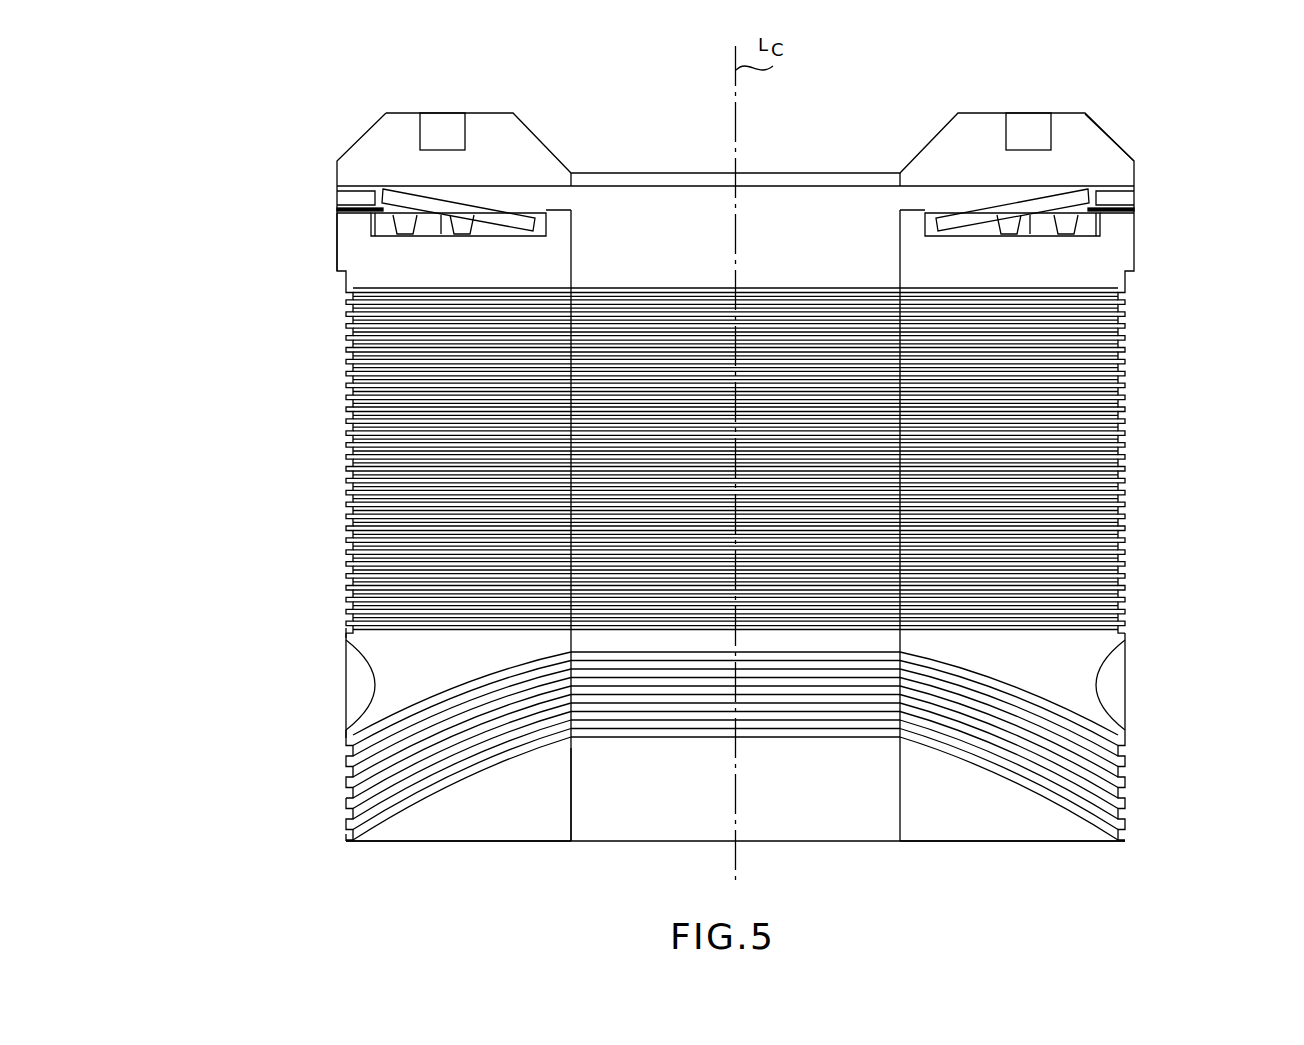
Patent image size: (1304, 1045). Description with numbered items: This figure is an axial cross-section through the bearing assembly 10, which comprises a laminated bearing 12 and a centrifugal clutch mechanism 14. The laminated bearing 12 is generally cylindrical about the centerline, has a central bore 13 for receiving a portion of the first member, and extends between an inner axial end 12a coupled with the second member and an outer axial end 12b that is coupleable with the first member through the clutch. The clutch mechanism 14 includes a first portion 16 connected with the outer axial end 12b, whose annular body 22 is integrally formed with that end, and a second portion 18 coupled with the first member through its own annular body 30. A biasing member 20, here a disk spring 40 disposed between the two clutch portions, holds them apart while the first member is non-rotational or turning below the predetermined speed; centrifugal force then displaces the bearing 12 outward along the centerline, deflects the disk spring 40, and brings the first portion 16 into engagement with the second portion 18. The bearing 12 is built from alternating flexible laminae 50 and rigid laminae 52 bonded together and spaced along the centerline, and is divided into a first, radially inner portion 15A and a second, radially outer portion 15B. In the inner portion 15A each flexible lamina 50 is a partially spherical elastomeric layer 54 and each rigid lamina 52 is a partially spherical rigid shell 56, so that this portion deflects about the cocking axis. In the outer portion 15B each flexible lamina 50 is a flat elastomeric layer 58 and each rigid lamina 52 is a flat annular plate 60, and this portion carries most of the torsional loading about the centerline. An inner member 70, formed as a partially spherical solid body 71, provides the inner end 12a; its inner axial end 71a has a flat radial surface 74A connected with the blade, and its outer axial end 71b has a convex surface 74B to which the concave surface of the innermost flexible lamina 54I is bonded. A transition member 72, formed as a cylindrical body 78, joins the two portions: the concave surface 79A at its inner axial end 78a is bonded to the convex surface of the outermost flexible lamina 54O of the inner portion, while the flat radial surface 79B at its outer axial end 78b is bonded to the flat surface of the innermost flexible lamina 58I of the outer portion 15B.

The bearing assembly 10 is at (1215, 170).
The laminated bearing 12 is at (255, 468).
The inner axial end 12a is at (1045, 834).
The outer axial end 12b is at (365, 268).
The central bore 13 is at (570, 796).
The centrifugal clutch mechanism 14 is at (280, 205).
The first radially inner portion 15A is at (255, 770).
The second radially outer portion 15B is at (300, 413).
The first portion 16 is at (1130, 238).
The second portion 18 is at (1072, 102).
The biasing member 20 is at (982, 200).
The annular body 22 is at (1112, 235).
The annular body 30 is at (1098, 150).
The disk spring 40 is at (455, 204).
The flexible laminae 50 is at (1112, 298).
The rigid laminae 52 is at (1118, 308).
The partially spherical layer 54 is at (375, 775).
The outermost flexible lamina 54O is at (360, 718).
The innermost flexible lamina 54I is at (345, 820).
The partially spherical rigid shell 56 is at (372, 748).
The flat layer 58 is at (346, 318).
The innermost flexible lamina 58I is at (340, 625).
The flat annular plate 60 is at (344, 291).
The inner member 70 is at (490, 818).
The solid body 71 is at (528, 806).
The inner axial end 71a is at (990, 836).
The outer axial end 71b is at (1003, 770).
The transition member 72 is at (360, 655).
The flat radial surface 74A is at (922, 836).
The partially spherical convex surface 74B is at (933, 734).
The cylindrical body 78 is at (382, 682).
The inner axial end 78a is at (448, 683).
The outer axial end 78b is at (1062, 626).
The partially spherical concave surface 79A is at (988, 680).
The flat radial surface 79B is at (950, 620).